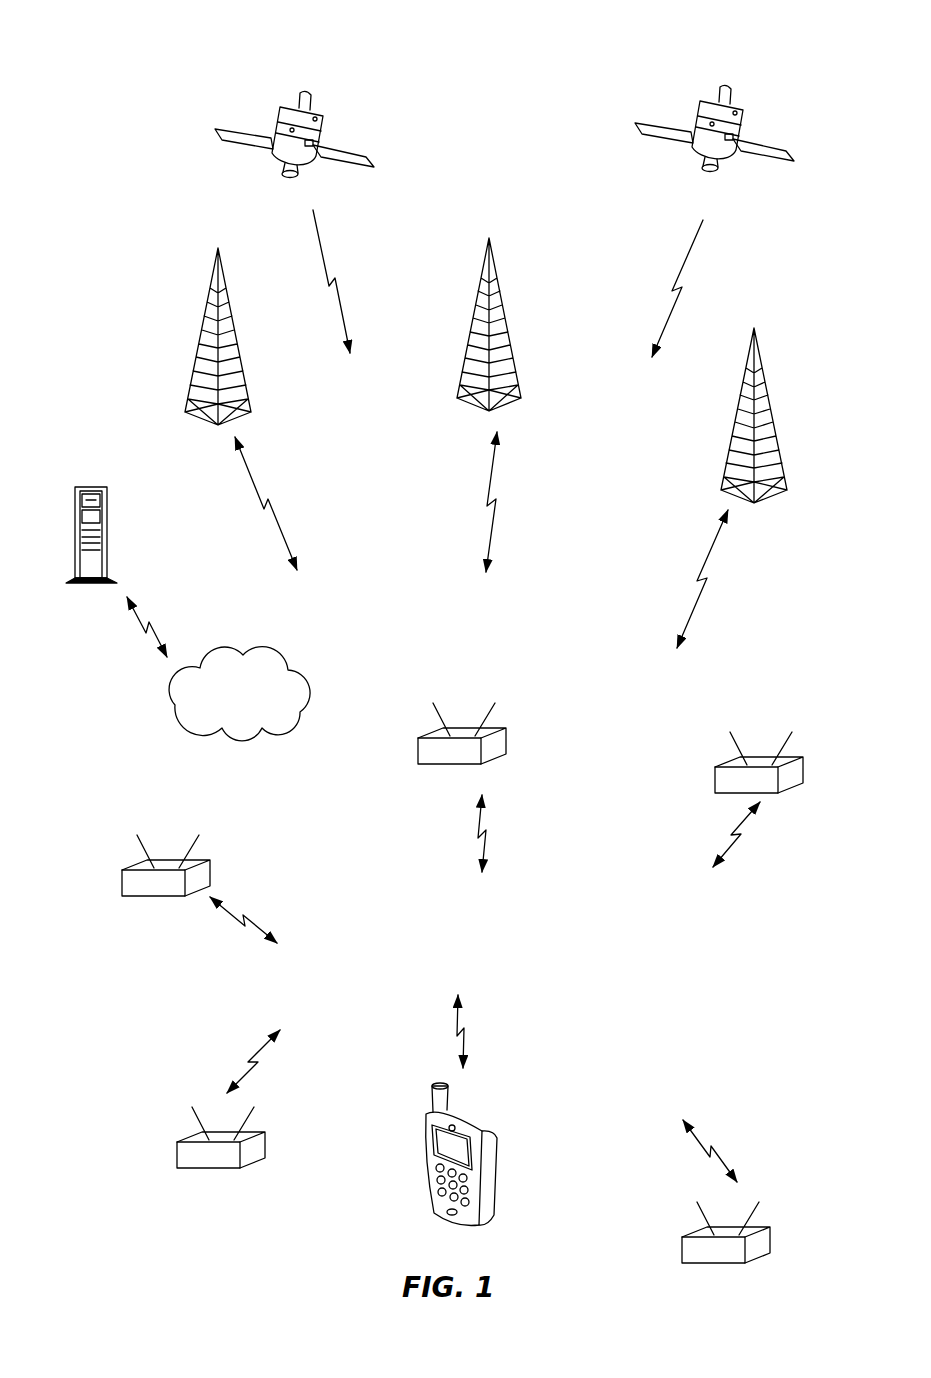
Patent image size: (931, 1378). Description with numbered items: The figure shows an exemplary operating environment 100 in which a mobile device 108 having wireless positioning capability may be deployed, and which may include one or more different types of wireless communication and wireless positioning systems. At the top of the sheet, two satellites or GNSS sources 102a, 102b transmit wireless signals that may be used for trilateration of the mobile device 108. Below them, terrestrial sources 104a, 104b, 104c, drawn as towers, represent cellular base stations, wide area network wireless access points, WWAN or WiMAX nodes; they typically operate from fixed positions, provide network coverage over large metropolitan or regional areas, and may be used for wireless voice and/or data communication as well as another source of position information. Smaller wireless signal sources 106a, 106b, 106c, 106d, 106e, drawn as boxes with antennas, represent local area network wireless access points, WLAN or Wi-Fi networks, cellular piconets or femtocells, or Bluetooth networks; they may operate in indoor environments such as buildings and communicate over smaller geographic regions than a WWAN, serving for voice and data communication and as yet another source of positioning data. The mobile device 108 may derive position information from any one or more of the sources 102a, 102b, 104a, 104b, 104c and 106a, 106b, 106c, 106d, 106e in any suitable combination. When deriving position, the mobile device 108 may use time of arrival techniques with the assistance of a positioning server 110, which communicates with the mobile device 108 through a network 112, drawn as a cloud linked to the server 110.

The operating environment 100 is at (109, 71).
The satellite or GNSS source 102a is at (310, 93).
The satellite or GNSS source 102b is at (718, 88).
The terrestrial source 104a is at (216, 252).
The terrestrial source 104b is at (490, 250).
The terrestrial source 104c is at (755, 337).
The wireless signal source 106a is at (208, 862).
The wireless signal source 106b is at (505, 738).
The wireless signal source 106c is at (716, 775).
The wireless signal source 106d is at (265, 1142).
The wireless signal source 106e is at (682, 1245).
The mobile device 108 is at (497, 1140).
The positioning server 110 is at (88, 487).
The network 112 is at (262, 650).